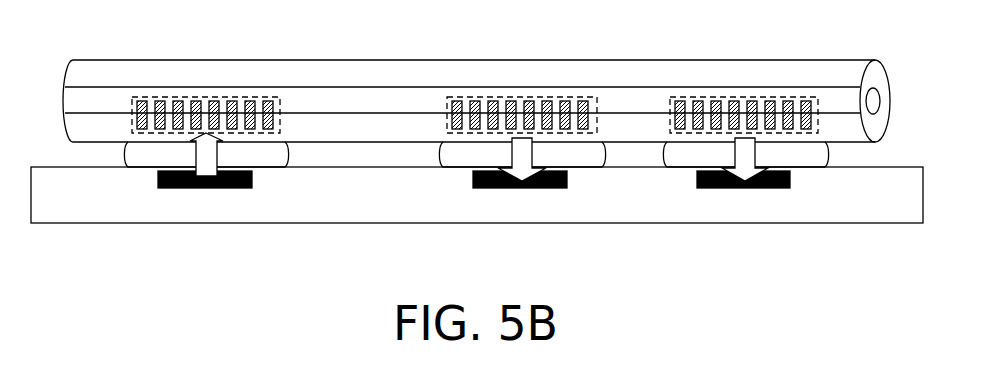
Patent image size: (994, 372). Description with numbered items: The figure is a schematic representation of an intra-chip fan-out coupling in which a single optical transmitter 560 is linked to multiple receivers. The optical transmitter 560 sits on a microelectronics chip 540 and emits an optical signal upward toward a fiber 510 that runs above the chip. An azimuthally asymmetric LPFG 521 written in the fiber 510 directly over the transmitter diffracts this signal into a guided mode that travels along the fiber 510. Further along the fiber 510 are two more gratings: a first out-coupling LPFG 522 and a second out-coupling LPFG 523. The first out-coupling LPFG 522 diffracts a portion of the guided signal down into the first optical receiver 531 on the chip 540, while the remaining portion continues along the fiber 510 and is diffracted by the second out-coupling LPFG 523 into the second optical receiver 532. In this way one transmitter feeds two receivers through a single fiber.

The fiber 510 is at (345, 75).
The azimuthally asymmetric LPFG 521 is at (207, 97).
The first out-coupling LPFG 522 is at (522, 97).
The second out-coupling LPFG 523 is at (745, 97).
The microelectronics chip 540 is at (477, 195).
The optical transmitter 560 is at (173, 180).
The first optical receiver 531 is at (488, 180).
The second optical receiver 532 is at (712, 180).